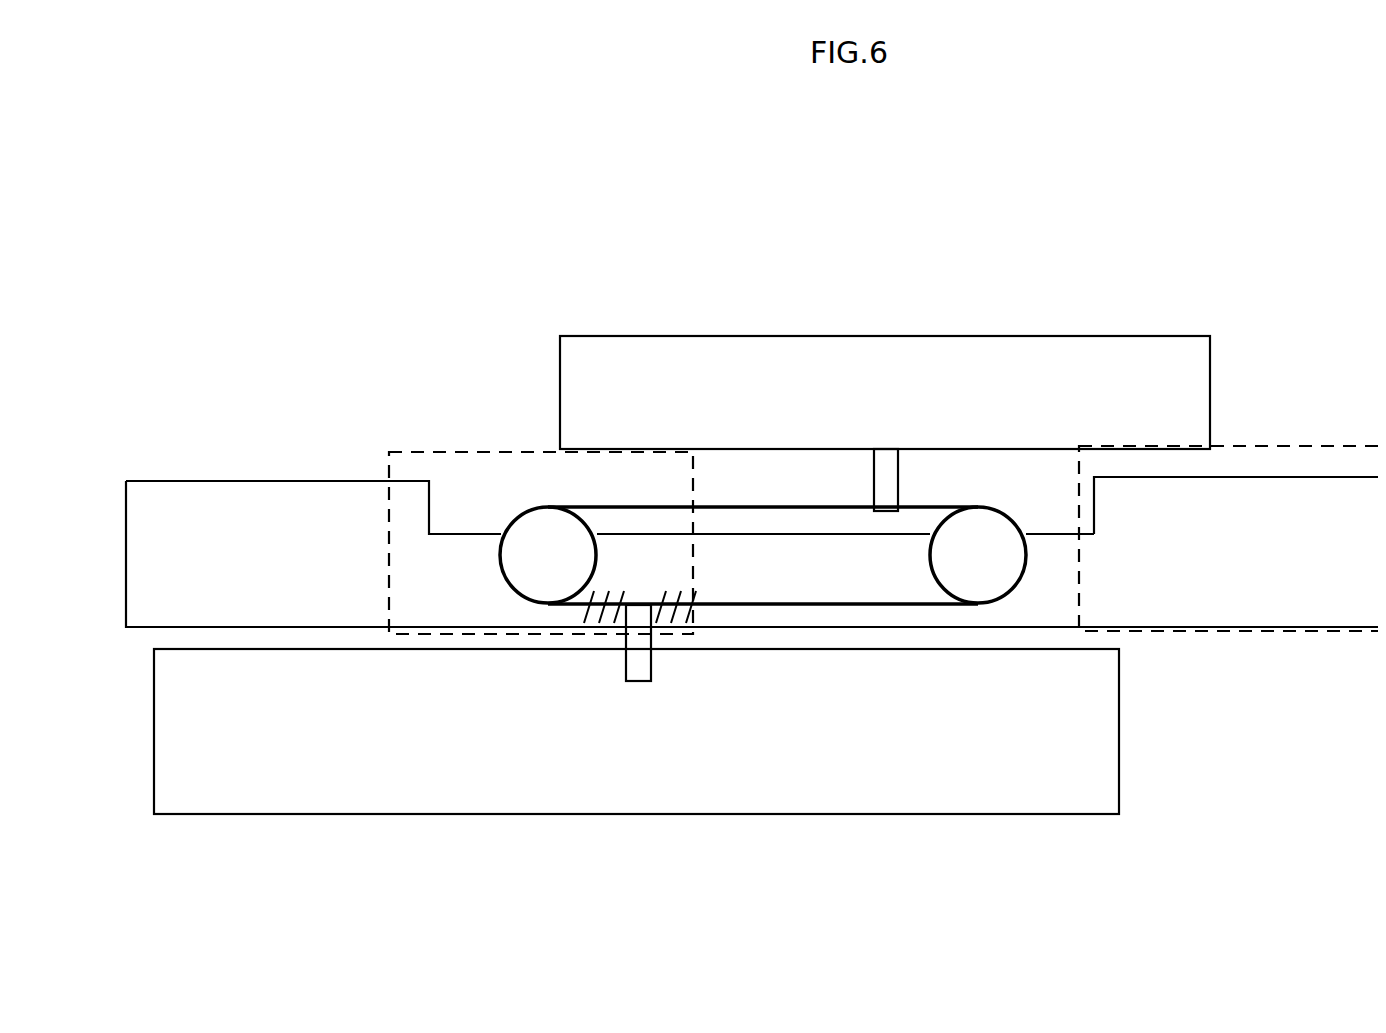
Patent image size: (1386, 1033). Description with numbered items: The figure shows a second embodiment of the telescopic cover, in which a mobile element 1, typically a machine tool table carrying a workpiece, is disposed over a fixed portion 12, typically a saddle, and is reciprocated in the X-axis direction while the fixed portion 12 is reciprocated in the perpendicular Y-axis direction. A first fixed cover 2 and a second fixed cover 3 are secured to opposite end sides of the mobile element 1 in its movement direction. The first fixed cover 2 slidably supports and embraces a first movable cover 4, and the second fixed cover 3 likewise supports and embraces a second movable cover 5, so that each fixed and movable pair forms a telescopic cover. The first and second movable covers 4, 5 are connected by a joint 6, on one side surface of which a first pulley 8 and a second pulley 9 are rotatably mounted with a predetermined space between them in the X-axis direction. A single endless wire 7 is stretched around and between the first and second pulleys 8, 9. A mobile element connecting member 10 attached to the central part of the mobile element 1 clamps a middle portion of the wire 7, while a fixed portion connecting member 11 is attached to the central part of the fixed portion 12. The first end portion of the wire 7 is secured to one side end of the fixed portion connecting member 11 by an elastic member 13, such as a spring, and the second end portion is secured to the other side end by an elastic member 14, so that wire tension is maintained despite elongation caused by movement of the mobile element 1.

The mobile element 1 is at (884, 334).
The first fixed cover 2 is at (494, 447).
The second fixed cover 3 is at (1270, 445).
The first movable cover 4 is at (333, 478).
The second movable cover 5 is at (1297, 475).
The joint 6 is at (1042, 565).
The wire 7 is at (773, 502).
The first pulley 8 is at (538, 515).
The second pulley 9 is at (955, 530).
The mobile element connecting member 10 is at (870, 478).
The fixed portion connecting member 11 is at (640, 682).
The fixed portion 12 is at (1025, 815).
The elastic member 13 is at (594, 628).
The elastic member 14 is at (670, 625).